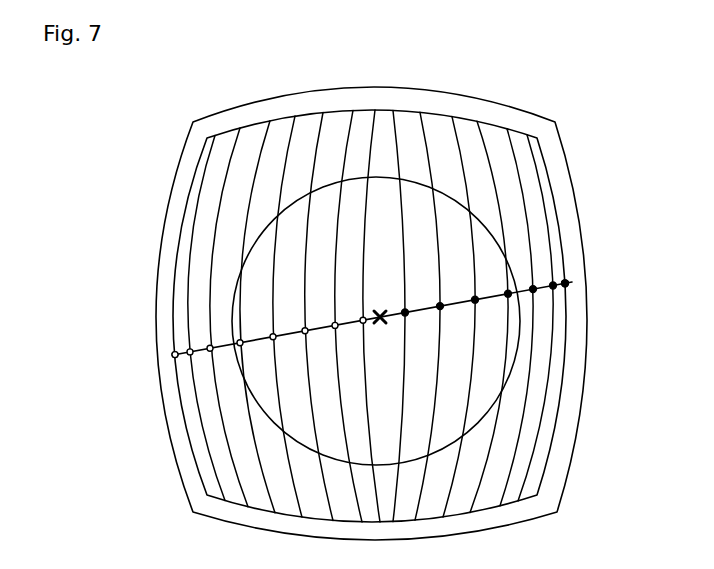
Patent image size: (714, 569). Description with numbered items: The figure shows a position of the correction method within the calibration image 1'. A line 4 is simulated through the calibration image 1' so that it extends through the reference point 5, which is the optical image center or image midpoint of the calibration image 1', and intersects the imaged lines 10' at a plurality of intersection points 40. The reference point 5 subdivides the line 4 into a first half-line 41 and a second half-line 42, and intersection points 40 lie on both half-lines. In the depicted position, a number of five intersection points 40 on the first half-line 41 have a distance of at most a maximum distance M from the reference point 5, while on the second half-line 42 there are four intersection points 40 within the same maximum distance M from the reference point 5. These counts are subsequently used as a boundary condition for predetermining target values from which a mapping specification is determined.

The calibration image 1' is at (404, 313).
The imaged lines 10' is at (407, 316).
The maximum distance M is at (436, 189).
The line 4 is at (326, 335).
The first half-line 41 is at (292, 320).
The second half-line 42 is at (423, 300).
The reference point 5 is at (383, 306).
The intersection points 40 is at (173, 352).